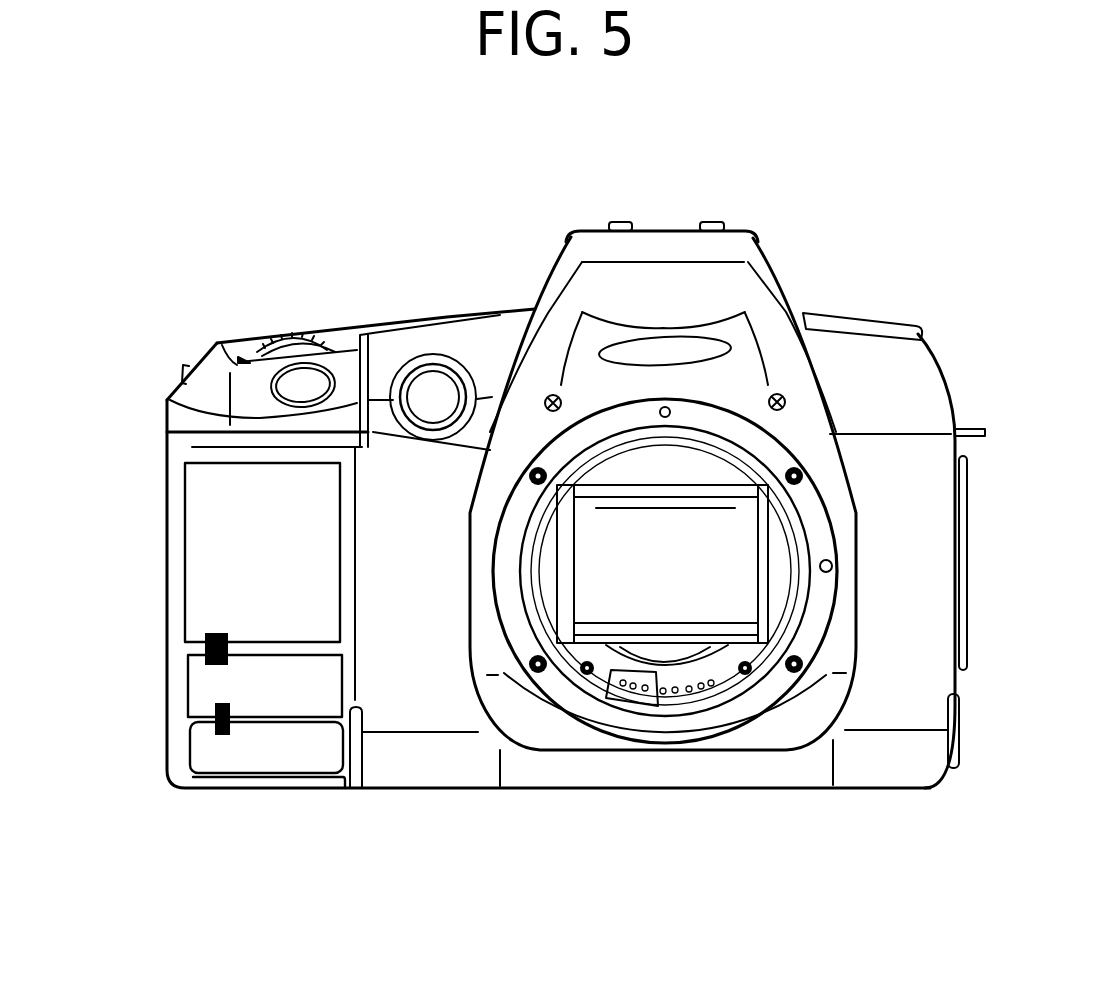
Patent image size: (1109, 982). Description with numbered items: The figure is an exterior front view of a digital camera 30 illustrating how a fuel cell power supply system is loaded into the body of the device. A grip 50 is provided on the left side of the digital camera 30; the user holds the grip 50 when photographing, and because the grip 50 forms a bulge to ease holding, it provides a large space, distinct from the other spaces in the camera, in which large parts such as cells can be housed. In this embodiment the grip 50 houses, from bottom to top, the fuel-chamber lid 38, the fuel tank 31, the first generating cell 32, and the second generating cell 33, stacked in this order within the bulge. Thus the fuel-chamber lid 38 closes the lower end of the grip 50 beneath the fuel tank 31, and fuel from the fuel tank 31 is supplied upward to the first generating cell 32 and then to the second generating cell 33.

The digital camera 30 is at (728, 292).
The grip 50 is at (178, 455).
The second generating cell 33 is at (204, 545).
The first generating cell 32 is at (200, 692).
The fuel tank 31 is at (200, 757).
The fuel-chamber lid 38 is at (222, 792).